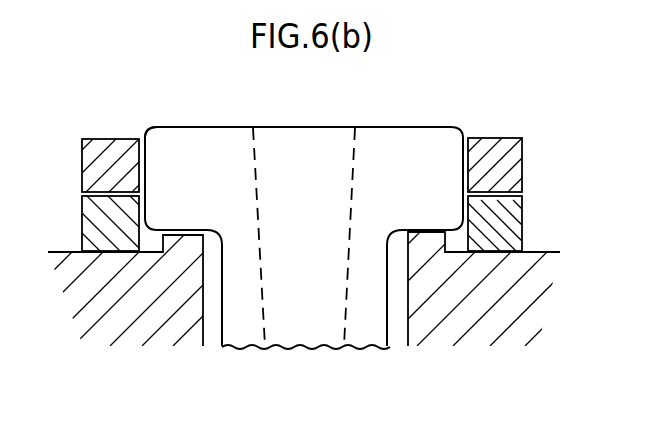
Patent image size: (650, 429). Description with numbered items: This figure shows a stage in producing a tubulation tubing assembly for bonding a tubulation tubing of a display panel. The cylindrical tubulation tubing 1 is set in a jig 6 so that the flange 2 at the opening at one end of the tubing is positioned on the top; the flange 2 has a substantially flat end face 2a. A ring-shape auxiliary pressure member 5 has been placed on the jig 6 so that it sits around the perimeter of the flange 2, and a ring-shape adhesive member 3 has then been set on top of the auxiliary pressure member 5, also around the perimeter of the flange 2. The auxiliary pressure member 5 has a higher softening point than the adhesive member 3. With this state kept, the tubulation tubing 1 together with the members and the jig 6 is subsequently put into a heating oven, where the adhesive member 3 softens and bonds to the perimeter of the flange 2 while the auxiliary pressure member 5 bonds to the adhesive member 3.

The tubulation tubing 1 is at (370, 311).
The flange 2 is at (438, 132).
The end face 2a is at (195, 127).
The adhesive member 3 is at (515, 153).
The auxiliary pressure member 5 is at (518, 221).
The jig 6 is at (528, 262).